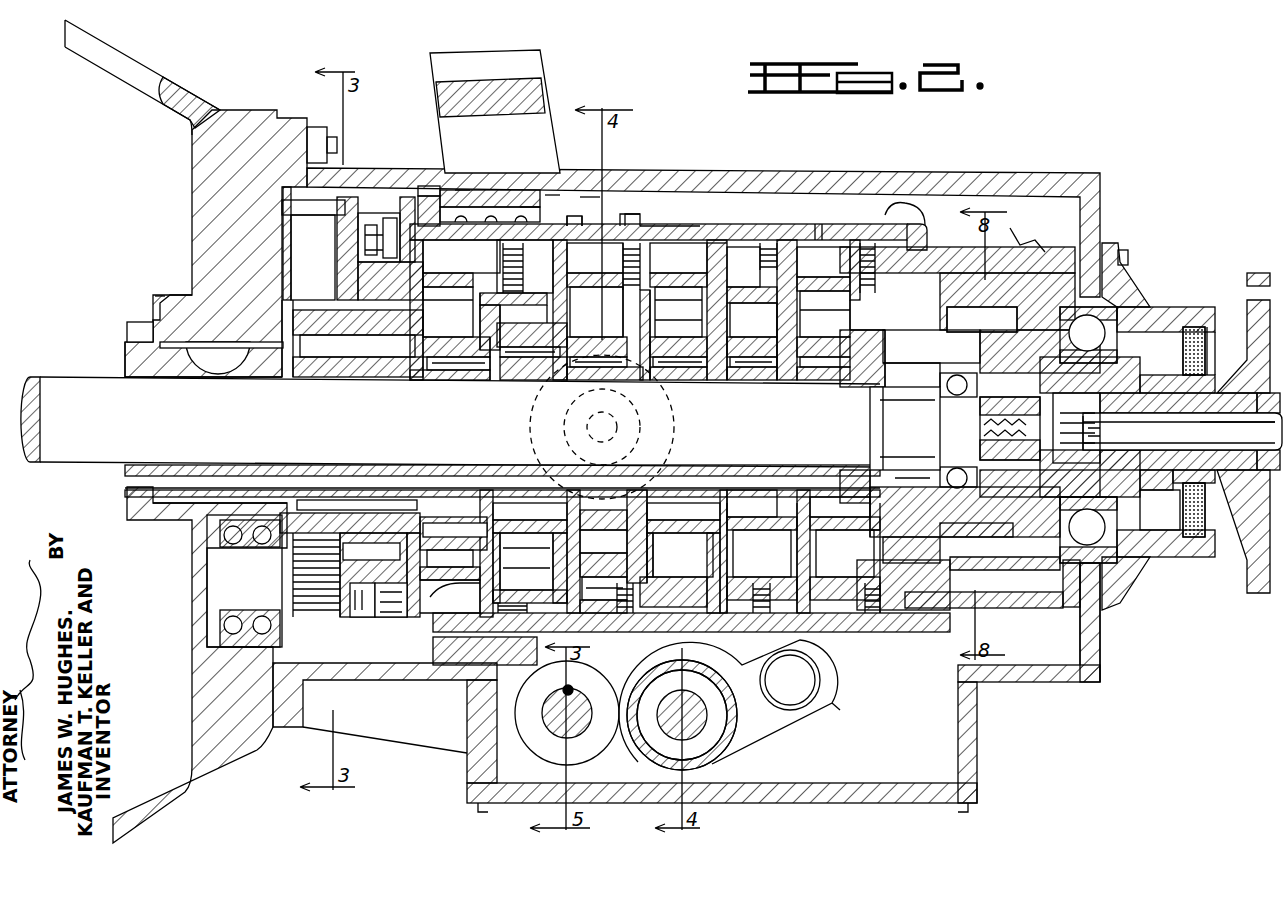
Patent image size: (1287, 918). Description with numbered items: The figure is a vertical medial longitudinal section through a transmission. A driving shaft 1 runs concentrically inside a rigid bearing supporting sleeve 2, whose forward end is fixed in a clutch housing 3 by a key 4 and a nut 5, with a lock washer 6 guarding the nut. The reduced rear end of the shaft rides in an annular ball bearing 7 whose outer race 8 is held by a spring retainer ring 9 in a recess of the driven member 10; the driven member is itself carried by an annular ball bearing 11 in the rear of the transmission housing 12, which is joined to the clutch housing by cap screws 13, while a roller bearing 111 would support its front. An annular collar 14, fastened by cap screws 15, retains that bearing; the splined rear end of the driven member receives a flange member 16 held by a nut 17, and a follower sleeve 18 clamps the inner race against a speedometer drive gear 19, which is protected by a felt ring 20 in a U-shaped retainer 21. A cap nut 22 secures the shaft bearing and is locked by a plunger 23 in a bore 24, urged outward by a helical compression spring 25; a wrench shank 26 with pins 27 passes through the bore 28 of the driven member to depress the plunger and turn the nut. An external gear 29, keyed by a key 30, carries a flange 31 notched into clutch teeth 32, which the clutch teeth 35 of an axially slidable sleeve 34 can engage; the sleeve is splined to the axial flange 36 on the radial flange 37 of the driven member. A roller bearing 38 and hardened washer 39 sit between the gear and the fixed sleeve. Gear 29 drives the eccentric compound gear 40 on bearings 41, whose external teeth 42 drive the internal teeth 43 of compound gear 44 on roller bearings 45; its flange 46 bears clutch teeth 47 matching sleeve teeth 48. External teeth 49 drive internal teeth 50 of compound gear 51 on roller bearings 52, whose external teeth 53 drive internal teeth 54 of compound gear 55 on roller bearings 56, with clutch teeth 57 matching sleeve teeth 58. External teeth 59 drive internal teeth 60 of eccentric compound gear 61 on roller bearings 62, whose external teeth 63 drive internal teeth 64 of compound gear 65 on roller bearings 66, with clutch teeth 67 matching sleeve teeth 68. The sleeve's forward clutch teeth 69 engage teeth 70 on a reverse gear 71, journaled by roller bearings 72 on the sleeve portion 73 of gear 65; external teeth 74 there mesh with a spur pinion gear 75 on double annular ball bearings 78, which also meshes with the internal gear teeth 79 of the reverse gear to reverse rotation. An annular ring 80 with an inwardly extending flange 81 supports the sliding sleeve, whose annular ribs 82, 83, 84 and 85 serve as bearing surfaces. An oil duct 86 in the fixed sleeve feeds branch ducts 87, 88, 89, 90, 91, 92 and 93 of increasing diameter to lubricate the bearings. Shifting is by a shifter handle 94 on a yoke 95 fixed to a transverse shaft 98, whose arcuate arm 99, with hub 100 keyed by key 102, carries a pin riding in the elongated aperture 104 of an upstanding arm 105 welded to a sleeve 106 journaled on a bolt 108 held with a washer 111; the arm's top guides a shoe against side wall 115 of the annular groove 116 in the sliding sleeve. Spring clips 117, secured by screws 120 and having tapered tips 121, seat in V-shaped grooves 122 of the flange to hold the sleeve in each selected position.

The driving shaft 1 is at (85, 458).
The bearing supporting sleeve 2 is at (125, 362).
The clutch housing 3 is at (200, 255).
The key 4 is at (175, 295).
The nut 5 is at (135, 322).
The lock washer 6 is at (158, 294).
The annular ball bearing 7 is at (925, 400).
The outer race 8 is at (912, 476).
The spring retainer ring 9 is at (892, 470).
The driven member 10 is at (1108, 345).
The annular ball bearing 11 is at (1130, 550).
The transmission housing 12 is at (1100, 650).
The cap screws 13 is at (338, 150).
The annular collar 14 is at (1140, 307).
The cap screws 15 is at (1130, 255).
The flange member 16 is at (1245, 580).
The nut 17 is at (1262, 430).
The follower sleeve 18 is at (1106, 522).
The speedometer drive gear 19 is at (1150, 490).
The felt ring 20 is at (1195, 327).
The U-shaped retainer 21 is at (1212, 327).
The cap nut 22 is at (953, 396).
The plunger 23 is at (1050, 445).
The bore 24 is at (960, 458).
The helical compression spring 25 is at (980, 436).
The shank 26 is at (1182, 431).
The pins 27 is at (1088, 430).
The bore 28 is at (1240, 425).
The external gear 29 is at (840, 320).
The key 30 is at (855, 386).
The radially extending flange 31 is at (852, 300).
The clutch teeth 32 is at (820, 278).
The axially slidable sleeve 34 is at (690, 226).
The clutch teeth 35 is at (790, 290).
The axially extending flange 36 is at (1020, 608).
The radially extending flange 37 is at (975, 570).
The roller bearing 38 is at (845, 497).
The hardened steel washer 39 is at (800, 503).
The compound internal-external gear 40 is at (790, 337).
The bearings 41 is at (780, 378).
The external gear teeth 42 is at (730, 378).
The internal gear teeth 43 is at (745, 287).
The compound internal-external gear 44 is at (705, 337).
The roller bearings 45 is at (670, 378).
The radially extending flange 46 is at (700, 290).
The clutch teeth 47 is at (730, 236).
The clutch teeth 48 is at (660, 272).
The external gear teeth 49 is at (652, 503).
The internal gear teeth 50 is at (724, 503).
The compound internal-external gear 51 is at (672, 300).
The roller bearings 52 is at (575, 355).
The external gear teeth 53 is at (640, 360).
The internal gear teeth 54 is at (595, 300).
The compound internal-external gear 55 is at (548, 300).
The roller bearings 56 is at (505, 360).
The clutch teeth 57 is at (605, 226).
The clutch teeth 58 is at (525, 285).
The external gear teeth 59 is at (540, 520).
The internal gear teeth 60 is at (520, 533).
The compound internal-external gear 61 is at (478, 594).
The roller bearings 62 is at (500, 533).
The external gear teeth 63 is at (484, 340).
The internal teeth 64 is at (478, 322).
The compound internal-external gear 65 is at (455, 300).
The roller bearings 66 is at (422, 360).
The clutch teeth 67 is at (395, 225).
The clutch teeth 68 is at (370, 225).
The clutch teeth 69 is at (400, 618).
The clutch teeth 70 is at (365, 618).
The reverse gear 71 is at (345, 665).
The roller bearings 72 is at (400, 500).
The sleeve portion 73 is at (372, 378).
The external gear teeth 74 is at (300, 340).
The spur pinion gear 75 is at (325, 490).
The double annular ball bearings 78 is at (262, 550).
The internal gear teeth 79 is at (313, 250).
The annular ring 80 is at (498, 190).
The inwardly extending flange 81 is at (555, 195).
The annular rib 82 is at (585, 197).
The annular rib 83 is at (528, 200).
The annular rib 84 is at (466, 187).
The annular rib 85 is at (430, 188).
The oil duct 86 is at (130, 478).
The branch duct 87 is at (385, 500).
The branch duct 88 is at (462, 517).
The branch duct 89 is at (535, 503).
The branch duct 90 is at (600, 510).
The branch duct 91 is at (690, 503).
The branch duct 92 is at (745, 503).
The branch duct 93 is at (840, 497).
The shifter handle 94 is at (438, 62).
The yoke 95 is at (442, 125).
The shaft 98 is at (568, 725).
The arcuate arm 99 is at (753, 637).
The hub 100 is at (600, 757).
The key 102 is at (586, 682).
The elongated aperture 104 is at (822, 668).
The upstanding arm 105 is at (845, 693).
The sleeve 106 is at (732, 742).
The bolt 108 is at (708, 717).
The washer 111 is at (955, 307).
The side wall 115 is at (665, 238).
The annular groove 116 is at (640, 226).
The spring clip 117 is at (908, 211).
The screws 120 is at (828, 220).
The tapered tip 121 is at (927, 245).
The V-shaped grooves 122 is at (1018, 240).